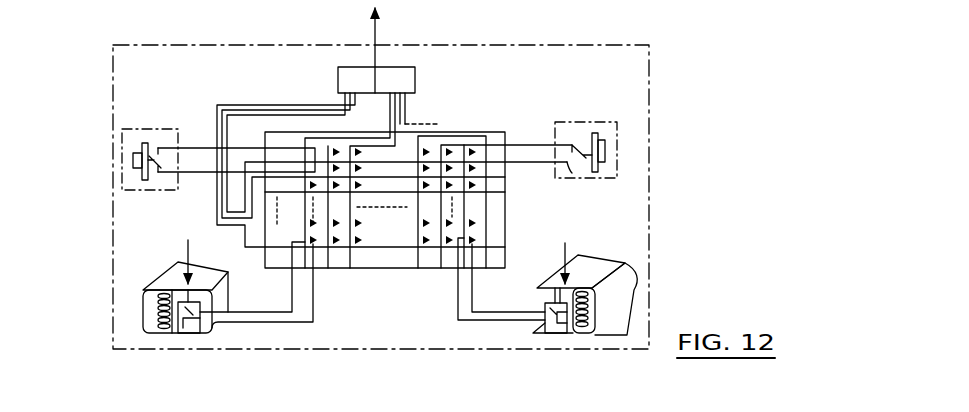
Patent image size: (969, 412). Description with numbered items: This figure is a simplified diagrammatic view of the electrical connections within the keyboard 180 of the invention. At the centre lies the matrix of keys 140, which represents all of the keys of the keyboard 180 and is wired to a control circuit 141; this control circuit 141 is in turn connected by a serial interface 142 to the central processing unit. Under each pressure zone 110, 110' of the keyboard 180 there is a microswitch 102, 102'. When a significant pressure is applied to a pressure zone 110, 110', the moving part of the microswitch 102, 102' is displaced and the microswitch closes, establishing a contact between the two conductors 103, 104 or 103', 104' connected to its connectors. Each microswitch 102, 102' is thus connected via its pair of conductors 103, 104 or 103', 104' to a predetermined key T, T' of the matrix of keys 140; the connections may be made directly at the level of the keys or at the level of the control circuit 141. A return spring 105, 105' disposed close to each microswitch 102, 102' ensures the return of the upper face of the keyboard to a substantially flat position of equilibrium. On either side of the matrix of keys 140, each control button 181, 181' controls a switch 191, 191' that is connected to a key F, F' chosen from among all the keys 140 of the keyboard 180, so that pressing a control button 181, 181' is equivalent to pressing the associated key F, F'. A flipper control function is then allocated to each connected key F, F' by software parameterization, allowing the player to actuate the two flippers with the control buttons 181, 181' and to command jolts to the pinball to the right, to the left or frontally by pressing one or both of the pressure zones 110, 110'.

The keyboard 180 is at (652, 68).
The control button 181 is at (594, 117).
The control button 181' is at (120, 122).
The switch 191 is at (631, 173).
The switch 191' is at (173, 124).
The matrix of keys 140 is at (481, 124).
The control circuit 141 is at (416, 78).
The serial interface 142 is at (380, 25).
The key F is at (508, 121).
The key F' is at (237, 115).
The key T is at (505, 227).
The key T' is at (339, 266).
The conductor 103 is at (508, 278).
The conductor 103' is at (252, 277).
The conductor 104 is at (472, 279).
The conductor 104' is at (282, 296).
The microswitch 102 is at (566, 318).
The microswitch 102' is at (189, 316).
The return spring 105 is at (641, 299).
The return spring 105' is at (111, 315).
The pressure zone 110 is at (597, 321).
The pressure zone 110' is at (160, 327).